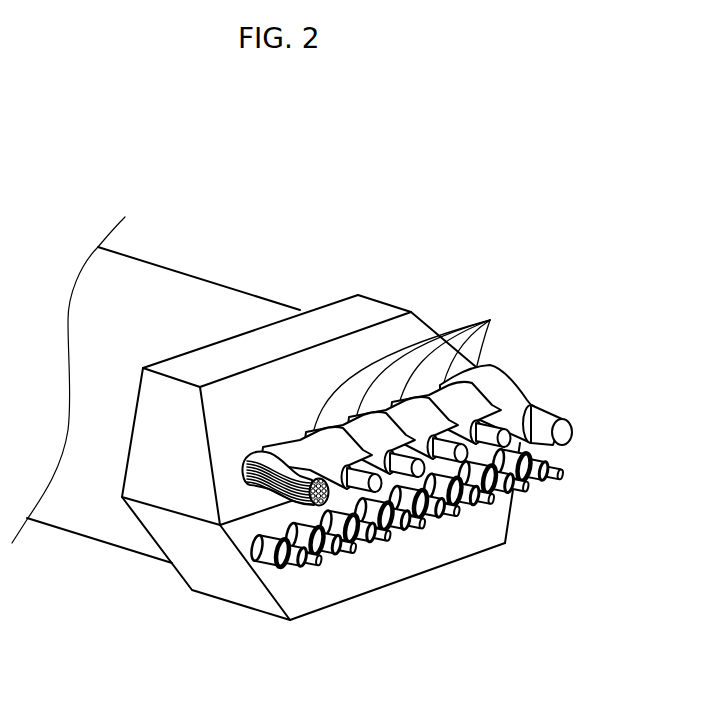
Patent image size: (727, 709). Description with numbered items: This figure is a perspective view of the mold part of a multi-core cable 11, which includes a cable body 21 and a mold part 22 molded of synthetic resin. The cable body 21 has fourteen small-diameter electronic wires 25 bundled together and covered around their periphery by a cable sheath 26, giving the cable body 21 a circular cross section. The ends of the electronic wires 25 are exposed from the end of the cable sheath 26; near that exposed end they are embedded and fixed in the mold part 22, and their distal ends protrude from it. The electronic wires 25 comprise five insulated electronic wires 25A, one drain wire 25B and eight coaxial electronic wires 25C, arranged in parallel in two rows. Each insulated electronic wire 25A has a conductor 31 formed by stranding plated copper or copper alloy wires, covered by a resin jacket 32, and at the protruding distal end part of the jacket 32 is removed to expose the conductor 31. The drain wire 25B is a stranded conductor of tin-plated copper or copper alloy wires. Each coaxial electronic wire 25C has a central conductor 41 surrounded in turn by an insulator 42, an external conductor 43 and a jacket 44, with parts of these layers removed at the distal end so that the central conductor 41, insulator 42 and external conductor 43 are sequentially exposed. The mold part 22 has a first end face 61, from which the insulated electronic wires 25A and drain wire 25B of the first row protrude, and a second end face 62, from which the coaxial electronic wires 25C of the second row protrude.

The multi-core cable 11 is at (385, 178).
The cable body 21 is at (176, 262).
The mold part 22 is at (433, 316).
The electronic wires 25 is at (505, 378).
The insulated electronic wires 25A is at (490, 320).
The drain wire 25B is at (244, 486).
The coaxial electronic wires 25C is at (519, 481).
The cable sheath 26 is at (222, 300).
The conductor 31 is at (550, 418).
The jacket 32 is at (531, 408).
The central conductor 41 is at (380, 543).
The insulator 42 is at (330, 557).
The external conductor 43 is at (282, 565).
The jacket 44 is at (258, 558).
The first end face 61 is at (350, 357).
The second end face 62 is at (440, 552).